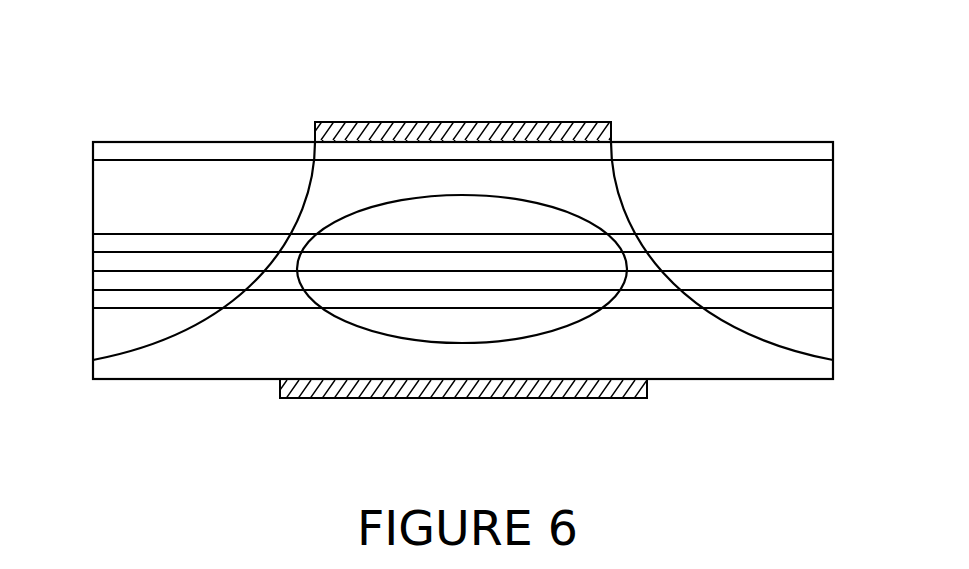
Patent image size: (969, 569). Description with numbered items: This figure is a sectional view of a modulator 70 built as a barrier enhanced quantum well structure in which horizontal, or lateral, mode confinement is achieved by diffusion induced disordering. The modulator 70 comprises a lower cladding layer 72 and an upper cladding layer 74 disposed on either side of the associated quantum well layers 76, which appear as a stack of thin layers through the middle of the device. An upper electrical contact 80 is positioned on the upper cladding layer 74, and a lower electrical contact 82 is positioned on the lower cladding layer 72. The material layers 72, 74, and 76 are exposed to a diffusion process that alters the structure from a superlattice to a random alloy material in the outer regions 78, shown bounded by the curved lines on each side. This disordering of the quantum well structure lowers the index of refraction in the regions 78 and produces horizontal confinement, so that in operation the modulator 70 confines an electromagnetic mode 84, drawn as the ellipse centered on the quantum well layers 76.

The modulator 70 is at (692, 112).
The cladding layer 72 is at (743, 379).
The cladding layer 74 is at (833, 187).
The quantum well layers 76 is at (90, 234).
The disordered regions 78 is at (197, 112).
The upper electrical contact 80 is at (473, 123).
The lower electrical contact 82 is at (462, 400).
The electromagnetic mode 84 is at (415, 323).